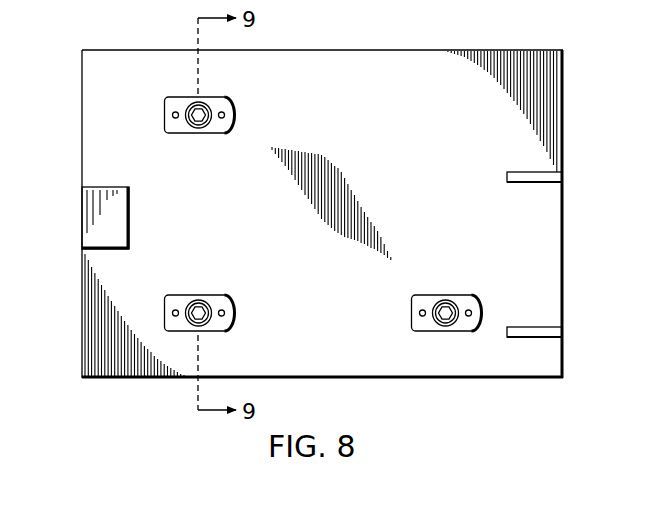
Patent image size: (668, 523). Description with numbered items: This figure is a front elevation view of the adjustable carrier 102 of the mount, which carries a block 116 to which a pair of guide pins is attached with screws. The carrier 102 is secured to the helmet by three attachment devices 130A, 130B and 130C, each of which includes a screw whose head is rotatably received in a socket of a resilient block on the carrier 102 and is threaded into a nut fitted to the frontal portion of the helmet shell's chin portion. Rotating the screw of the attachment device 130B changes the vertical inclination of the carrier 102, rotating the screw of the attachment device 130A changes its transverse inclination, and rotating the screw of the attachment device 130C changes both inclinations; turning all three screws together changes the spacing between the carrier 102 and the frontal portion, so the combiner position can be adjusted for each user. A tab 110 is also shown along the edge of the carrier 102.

The carrier 102 is at (568, 67).
The tab 110 is at (543, 327).
The block 116 is at (108, 249).
The attachment device 130A is at (471, 293).
The attachment device 130B is at (218, 135).
The attachment device 130C is at (228, 294).